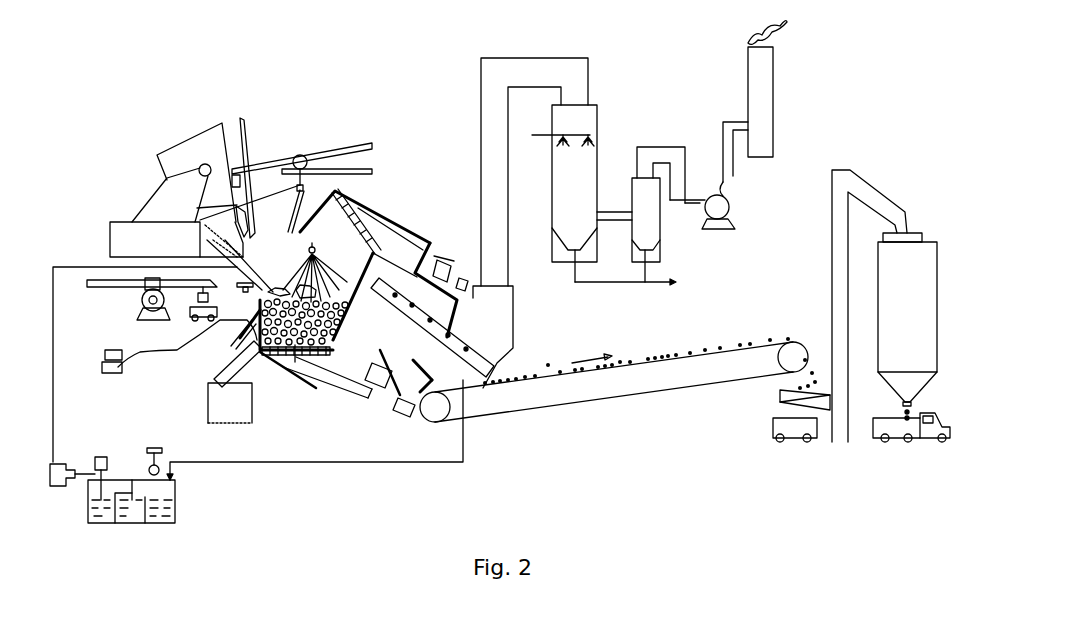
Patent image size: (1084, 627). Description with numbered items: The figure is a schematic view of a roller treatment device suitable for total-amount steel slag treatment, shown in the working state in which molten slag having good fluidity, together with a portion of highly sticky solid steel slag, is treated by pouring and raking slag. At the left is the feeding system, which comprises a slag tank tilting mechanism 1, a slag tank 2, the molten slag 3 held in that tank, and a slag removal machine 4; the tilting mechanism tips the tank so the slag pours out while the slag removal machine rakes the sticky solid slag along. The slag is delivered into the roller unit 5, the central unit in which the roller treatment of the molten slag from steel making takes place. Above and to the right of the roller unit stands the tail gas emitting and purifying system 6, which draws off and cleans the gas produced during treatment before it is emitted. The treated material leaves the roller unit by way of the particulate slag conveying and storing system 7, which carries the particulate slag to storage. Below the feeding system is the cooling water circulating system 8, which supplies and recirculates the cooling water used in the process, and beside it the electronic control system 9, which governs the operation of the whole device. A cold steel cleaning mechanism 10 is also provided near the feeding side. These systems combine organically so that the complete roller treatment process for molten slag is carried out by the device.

The slag tank tilting mechanism 1 is at (163, 207).
The slag tank 2 is at (195, 155).
The molten slag 3 is at (258, 255).
The slag removal machine 4 is at (300, 156).
The roller unit 5 is at (387, 243).
The tail gas emitting and purifying system 6 is at (495, 197).
The particulate slag conveying and storing system 7 is at (905, 235).
The cooling water circulating system 8 is at (142, 482).
The electronic control system 9 is at (107, 358).
The cold steel cleaning mechanism 10 is at (112, 283).